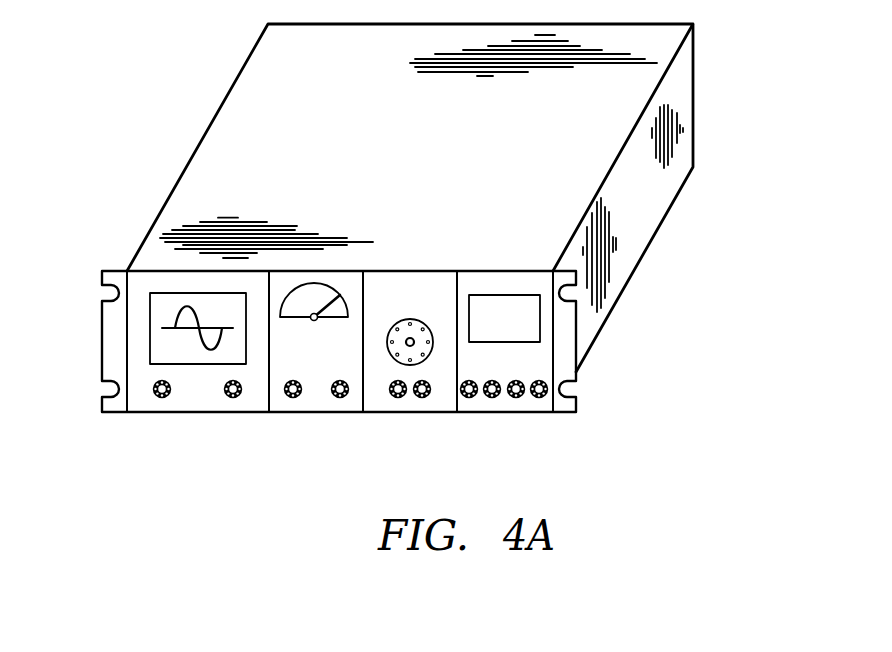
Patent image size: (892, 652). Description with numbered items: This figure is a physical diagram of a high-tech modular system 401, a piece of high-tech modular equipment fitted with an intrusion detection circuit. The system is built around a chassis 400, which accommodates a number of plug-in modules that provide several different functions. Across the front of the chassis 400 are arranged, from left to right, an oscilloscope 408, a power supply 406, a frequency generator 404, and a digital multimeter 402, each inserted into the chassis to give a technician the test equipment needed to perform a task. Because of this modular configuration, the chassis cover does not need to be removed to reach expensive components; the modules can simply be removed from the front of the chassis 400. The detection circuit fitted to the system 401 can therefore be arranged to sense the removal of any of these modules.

The chassis 400 is at (694, 97).
The high-tech modular system 401 is at (118, 68).
The digital multimeter 402 is at (503, 413).
The frequency generator 404 is at (410, 413).
The power supply 406 is at (322, 413).
The oscilloscope 408 is at (198, 413).